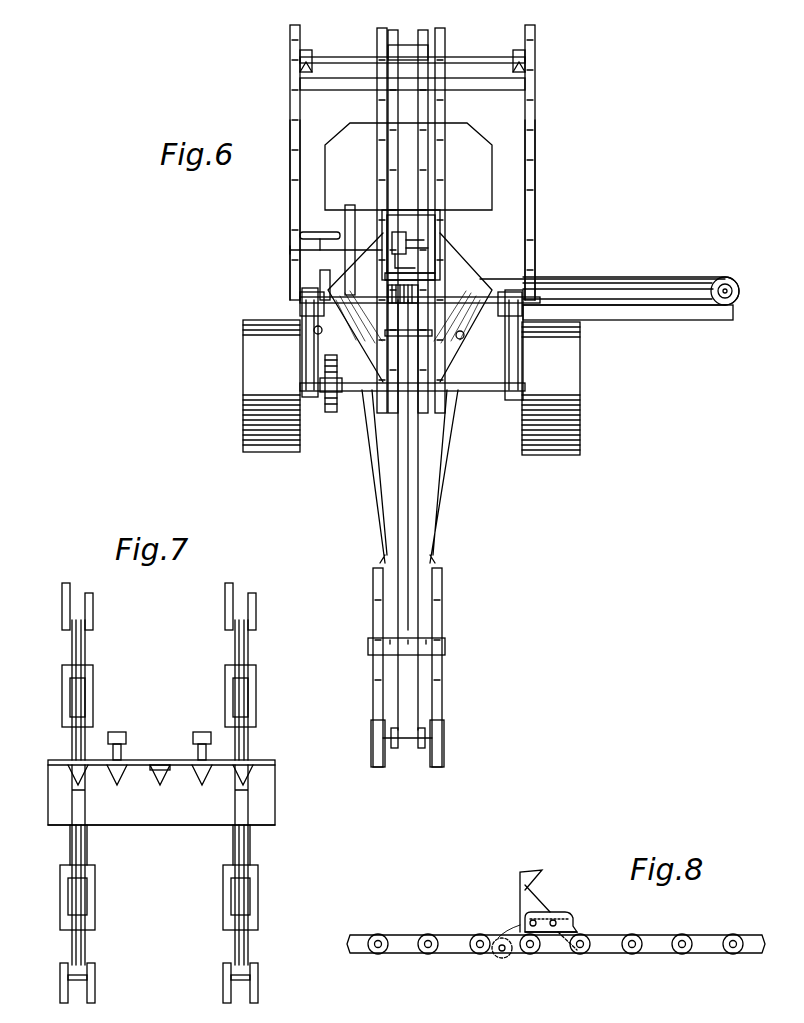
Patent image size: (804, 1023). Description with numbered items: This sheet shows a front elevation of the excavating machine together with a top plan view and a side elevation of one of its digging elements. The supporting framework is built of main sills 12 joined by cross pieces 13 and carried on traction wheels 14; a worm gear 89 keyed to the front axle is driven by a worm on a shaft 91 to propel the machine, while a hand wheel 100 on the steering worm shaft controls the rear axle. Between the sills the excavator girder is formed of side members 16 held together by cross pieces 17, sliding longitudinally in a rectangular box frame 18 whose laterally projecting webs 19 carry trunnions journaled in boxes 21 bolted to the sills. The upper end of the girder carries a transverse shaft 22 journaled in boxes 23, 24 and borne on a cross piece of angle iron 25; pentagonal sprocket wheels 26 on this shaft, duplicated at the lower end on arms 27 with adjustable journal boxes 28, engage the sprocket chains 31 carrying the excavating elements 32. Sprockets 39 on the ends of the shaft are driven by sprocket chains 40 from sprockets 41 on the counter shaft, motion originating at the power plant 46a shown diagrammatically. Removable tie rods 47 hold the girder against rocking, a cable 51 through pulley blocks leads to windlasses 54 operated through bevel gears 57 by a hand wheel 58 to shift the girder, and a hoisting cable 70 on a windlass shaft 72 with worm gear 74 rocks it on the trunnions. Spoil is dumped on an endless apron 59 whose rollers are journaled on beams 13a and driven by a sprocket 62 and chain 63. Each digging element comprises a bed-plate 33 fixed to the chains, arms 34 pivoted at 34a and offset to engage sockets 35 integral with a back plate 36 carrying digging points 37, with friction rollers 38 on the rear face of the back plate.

In FIG. 6, the main sills 12 is at (302, 342).
In FIG. 6, the cross pieces 13 is at (492, 392).
In FIG. 6, the beams 13a is at (631, 306).
In FIG. 6, the traction wheels 14 is at (243, 363).
In FIG. 6, the side members 16 is at (411, 585).
In FIG. 6, the cross pieces 17 is at (408, 515).
In FIG. 6, the supporting box frame 18 is at (431, 230).
In FIG. 6, the laterally projecting webs 19 is at (455, 258).
In FIG. 6, the boxes 21 is at (299, 306).
In FIG. 6, the transverse shaft 22 is at (482, 52).
In FIG. 6, the boxes 23 is at (310, 55).
In FIG. 6, the boxes 24 is at (412, 48).
In FIG. 6, the cross piece of angle iron 25 is at (476, 92).
In FIG. 6, the pentagonal sprocket wheels 26 is at (396, 36).
In FIG. 6, the arms 27 is at (403, 740).
In FIG. 6, the journal boxes 28 is at (408, 731).
In FIG. 6, the sprocket chains 31 is at (378, 104).
In FIG. 7, the sprocket chains 31 is at (60, 668).
In FIG. 8, the sprocket chains 31 is at (442, 935).
In FIG. 6, the excavating elements 32 is at (406, 636).
In FIG. 7, the excavating elements 32 is at (174, 792).
In FIG. 8, the excavating elements 32 is at (502, 911).
In FIG. 7, the bed-plate 33 is at (164, 825).
In FIG. 7, the arms 34 is at (72, 852).
In FIG. 8, the arms 34 is at (577, 929).
In FIG. 7, the pivot 34a is at (97, 878).
In FIG. 7, the sockets 35 is at (80, 804).
In FIG. 8, the sockets 35 is at (562, 907).
In FIG. 7, the back plate 36 is at (160, 764).
In FIG. 7, the digging points 37 is at (158, 782).
In FIG. 8, the digging points 37 is at (530, 870).
In FIG. 7, the friction rollers 38 is at (198, 734).
In FIG. 8, the friction rollers 38 is at (504, 956).
In FIG. 6, the sprockets 39 is at (292, 30).
In FIG. 6, the sprocket chains 40 is at (290, 195).
In FIG. 6, the sprockets 41 is at (290, 287).
In FIG. 6, the power plant 46a is at (338, 148).
In FIG. 6, the tie rod 47 is at (602, 269).
In FIG. 6, the cable 51 is at (370, 472).
In FIG. 6, the windlasses 54 is at (420, 310).
In FIG. 6, the bevel gears 57 is at (406, 243).
In FIG. 6, the hand wheel 58 is at (290, 252).
In FIG. 6, the endless apron 59 is at (719, 279).
In FIG. 6, the sprocket 62 is at (738, 291).
In FIG. 6, the chain 63 is at (642, 277).
In FIG. 6, the cable 70 is at (355, 277).
In FIG. 6, the shaft 72 is at (460, 331).
In FIG. 6, the worm gear 74 is at (316, 285).
In FIG. 6, the worm gear 89 is at (332, 408).
In FIG. 6, the shaft 91 is at (337, 360).
In FIG. 6, the hand wheel 100 is at (316, 232).